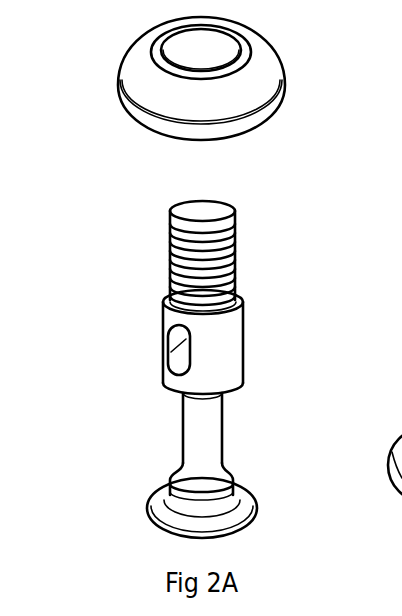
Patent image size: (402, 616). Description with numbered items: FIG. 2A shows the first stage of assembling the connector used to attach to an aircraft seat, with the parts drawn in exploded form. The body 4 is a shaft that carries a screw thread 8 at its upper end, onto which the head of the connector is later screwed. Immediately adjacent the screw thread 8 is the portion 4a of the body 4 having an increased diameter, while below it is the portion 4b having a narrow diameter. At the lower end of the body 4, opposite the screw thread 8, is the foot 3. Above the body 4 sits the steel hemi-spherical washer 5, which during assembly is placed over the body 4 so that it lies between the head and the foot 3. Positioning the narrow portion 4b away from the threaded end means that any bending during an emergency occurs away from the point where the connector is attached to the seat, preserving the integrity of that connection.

The hemi-spherical washer 5 is at (272, 70).
The body 4 is at (112, 205).
The screw thread 8 is at (235, 255).
The portion with an increased diameter 4a is at (247, 328).
The portion with a narrow diameter 4b is at (240, 424).
The foot 3 is at (148, 508).